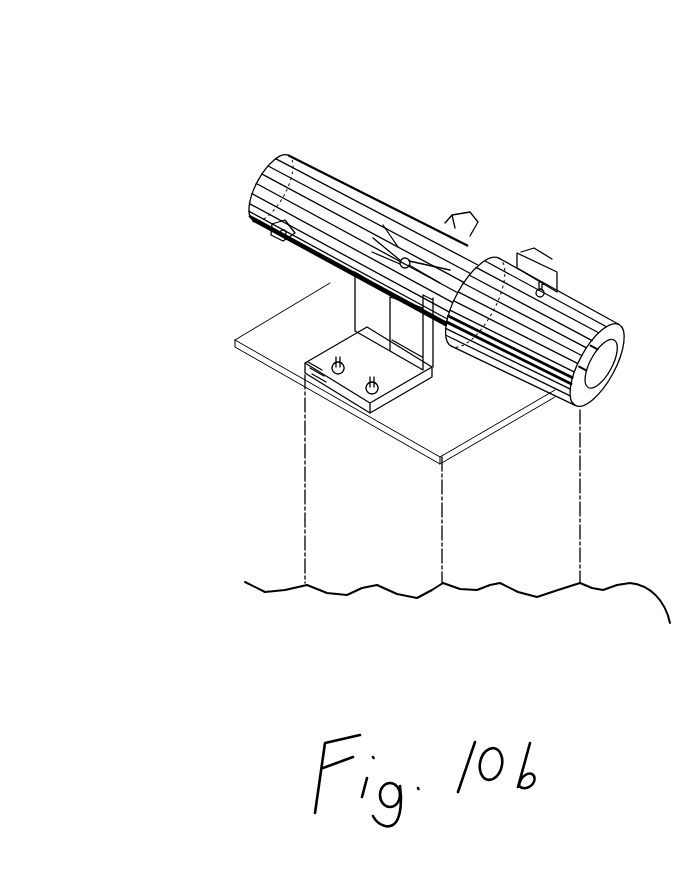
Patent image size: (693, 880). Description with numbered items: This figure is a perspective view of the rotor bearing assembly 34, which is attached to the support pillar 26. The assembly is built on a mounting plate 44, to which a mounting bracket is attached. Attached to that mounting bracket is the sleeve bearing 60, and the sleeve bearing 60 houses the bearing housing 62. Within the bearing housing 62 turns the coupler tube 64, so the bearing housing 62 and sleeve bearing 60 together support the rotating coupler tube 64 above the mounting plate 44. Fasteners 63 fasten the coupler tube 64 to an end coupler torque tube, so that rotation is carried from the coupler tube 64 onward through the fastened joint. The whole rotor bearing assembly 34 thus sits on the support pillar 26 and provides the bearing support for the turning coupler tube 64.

The rotor bearing assembly 34 is at (380, 124).
The sleeve bearing 60 is at (463, 245).
The bearing housing 62 is at (497, 267).
The fasteners 63 is at (277, 233).
The coupler tube 64 is at (591, 297).
The mounting plate 44 is at (629, 334).
The support pillar 26 is at (545, 557).